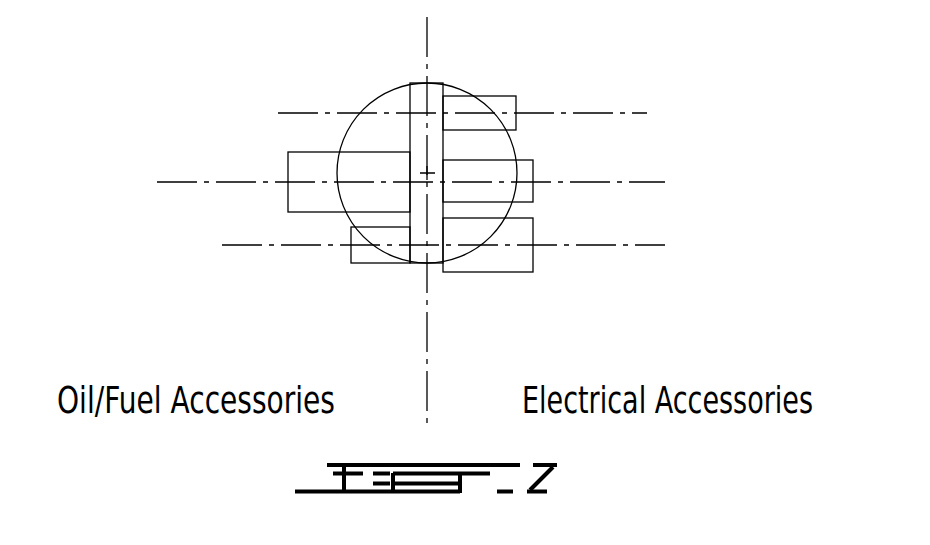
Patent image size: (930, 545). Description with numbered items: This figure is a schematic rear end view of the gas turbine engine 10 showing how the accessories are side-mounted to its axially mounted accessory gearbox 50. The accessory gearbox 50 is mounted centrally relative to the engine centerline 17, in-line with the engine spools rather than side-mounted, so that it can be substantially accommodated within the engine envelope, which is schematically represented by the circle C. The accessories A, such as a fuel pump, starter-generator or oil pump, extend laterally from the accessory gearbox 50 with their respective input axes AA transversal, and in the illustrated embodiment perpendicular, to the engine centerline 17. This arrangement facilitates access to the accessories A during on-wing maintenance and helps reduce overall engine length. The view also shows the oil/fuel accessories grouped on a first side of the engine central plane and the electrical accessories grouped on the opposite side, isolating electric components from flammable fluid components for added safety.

The gas turbine engine 10 is at (407, 214).
The engine centerline 17 is at (428, 176).
The accessory gearbox 50 is at (428, 100).
The accessories A is at (305, 150).
The circle C is at (347, 127).
The input axes AA is at (173, 182).